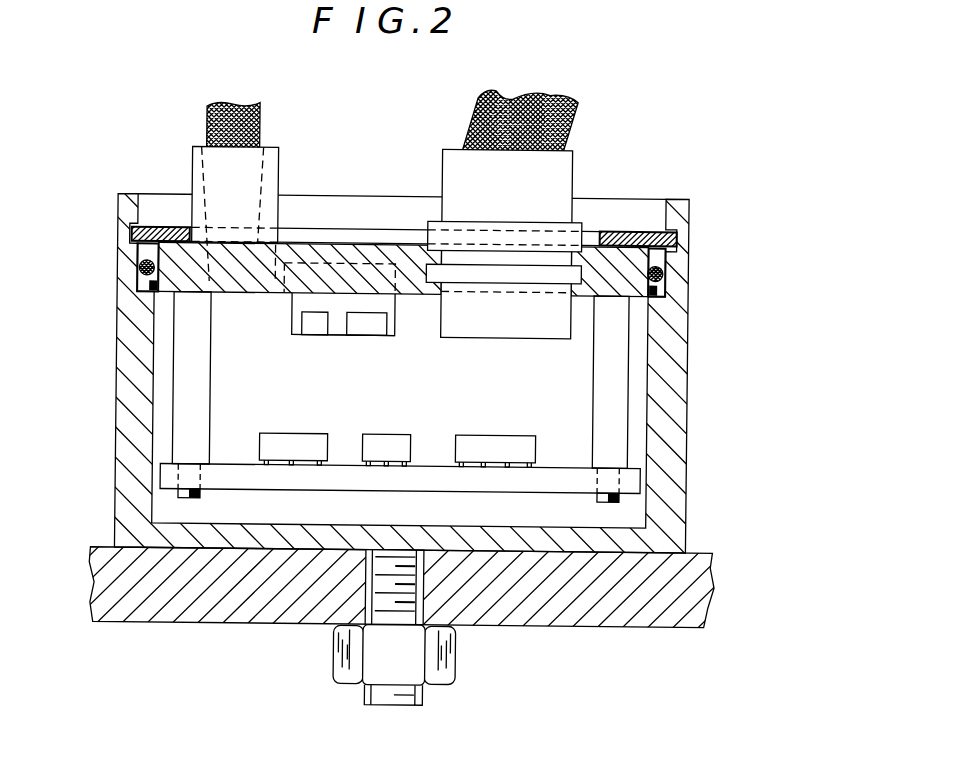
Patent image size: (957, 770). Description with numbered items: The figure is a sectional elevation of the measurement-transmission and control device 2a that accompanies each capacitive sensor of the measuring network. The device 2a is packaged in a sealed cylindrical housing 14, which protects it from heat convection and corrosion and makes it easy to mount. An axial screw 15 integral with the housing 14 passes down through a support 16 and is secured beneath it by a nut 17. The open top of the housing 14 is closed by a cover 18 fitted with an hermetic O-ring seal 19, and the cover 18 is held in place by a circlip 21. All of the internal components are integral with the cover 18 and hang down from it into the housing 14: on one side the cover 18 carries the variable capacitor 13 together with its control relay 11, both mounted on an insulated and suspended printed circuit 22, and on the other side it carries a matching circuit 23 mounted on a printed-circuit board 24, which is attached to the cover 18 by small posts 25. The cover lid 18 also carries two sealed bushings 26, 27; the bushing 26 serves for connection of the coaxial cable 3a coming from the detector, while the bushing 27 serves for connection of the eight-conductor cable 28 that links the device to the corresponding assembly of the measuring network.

The measurement-transmission and control device 2a is at (478, 385).
The coaxial cable 3a is at (200, 129).
The control relay 11 is at (377, 326).
The variable capacitor 13 is at (309, 326).
The housing 14 is at (121, 468).
The axial screw 15 is at (375, 597).
The support 16 is at (259, 612).
The nut 17 is at (415, 663).
The cover 18 is at (179, 279).
The O-ring seal 19 is at (136, 270).
The circlip 21 is at (126, 236).
The printed circuit 22 is at (339, 338).
The matching circuit 23 is at (395, 424).
The printed-circuit board 24 is at (356, 478).
The small posts 25 is at (200, 385).
The sealed bushing 26 is at (276, 179).
The sealed bushing 27 is at (450, 170).
The eight-conductor cable 28 is at (469, 117).